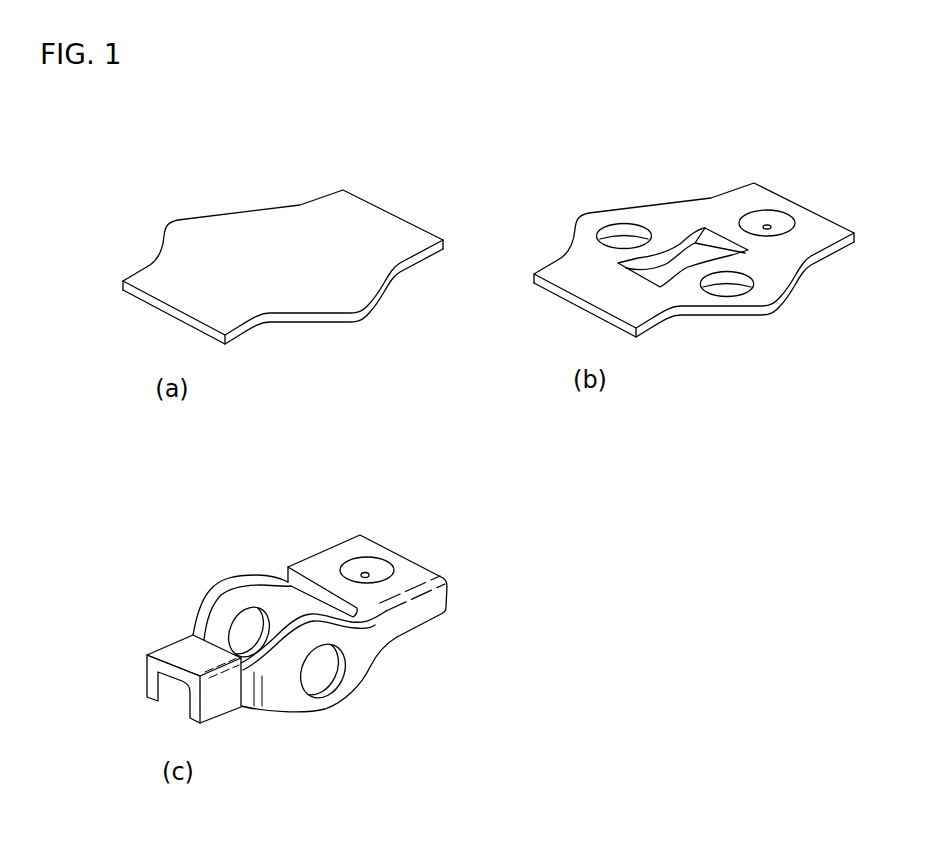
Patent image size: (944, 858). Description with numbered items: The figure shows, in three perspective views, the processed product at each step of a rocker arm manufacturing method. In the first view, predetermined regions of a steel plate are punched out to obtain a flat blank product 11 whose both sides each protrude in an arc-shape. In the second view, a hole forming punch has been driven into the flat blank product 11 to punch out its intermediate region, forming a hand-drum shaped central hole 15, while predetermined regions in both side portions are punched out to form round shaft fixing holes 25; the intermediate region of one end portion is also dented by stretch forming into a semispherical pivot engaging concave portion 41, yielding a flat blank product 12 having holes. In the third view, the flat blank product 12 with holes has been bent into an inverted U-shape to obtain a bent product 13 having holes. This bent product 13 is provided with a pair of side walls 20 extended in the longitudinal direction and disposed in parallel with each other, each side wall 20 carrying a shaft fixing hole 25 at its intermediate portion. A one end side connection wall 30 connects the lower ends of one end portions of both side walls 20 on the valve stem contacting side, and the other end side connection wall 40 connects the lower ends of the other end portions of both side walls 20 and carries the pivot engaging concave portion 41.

The flat blank product 11 is at (313, 190).
The flat blank product having holes 12 is at (694, 214).
The bent product having holes 13 is at (305, 617).
The central hole 15 is at (700, 245).
The side wall 20 is at (242, 592).
The shaft fixing hole 25 is at (623, 237).
The one end side connection wall 30 is at (178, 653).
The other end side connection wall 40 is at (412, 575).
The pivot engaging concave portion 41 is at (785, 217).